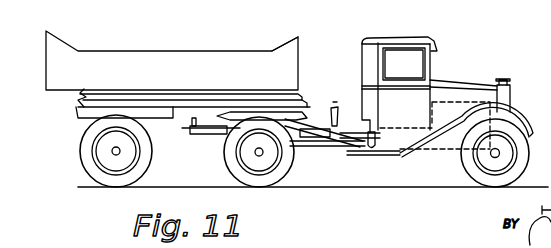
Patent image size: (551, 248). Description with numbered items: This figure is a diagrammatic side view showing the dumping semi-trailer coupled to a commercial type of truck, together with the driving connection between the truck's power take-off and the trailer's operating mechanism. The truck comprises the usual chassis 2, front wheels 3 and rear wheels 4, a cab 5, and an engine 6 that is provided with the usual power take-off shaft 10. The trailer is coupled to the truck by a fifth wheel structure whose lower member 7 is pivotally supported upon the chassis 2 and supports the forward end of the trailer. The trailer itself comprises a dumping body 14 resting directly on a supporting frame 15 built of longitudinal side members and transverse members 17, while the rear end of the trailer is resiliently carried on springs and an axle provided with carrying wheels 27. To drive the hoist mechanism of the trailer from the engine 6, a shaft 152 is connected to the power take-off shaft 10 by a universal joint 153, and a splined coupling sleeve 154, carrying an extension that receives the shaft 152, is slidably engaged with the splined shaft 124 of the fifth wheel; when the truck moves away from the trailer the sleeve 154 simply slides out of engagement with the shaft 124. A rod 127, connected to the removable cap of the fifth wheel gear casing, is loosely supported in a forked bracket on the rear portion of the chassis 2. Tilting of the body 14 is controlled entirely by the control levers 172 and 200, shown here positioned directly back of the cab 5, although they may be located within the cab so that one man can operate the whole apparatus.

The chassis 2 is at (300, 147).
The front wheels 3 is at (528, 157).
The rear wheels 4 is at (255, 188).
The cab 5 is at (409, 39).
The engine 6 is at (455, 103).
The lower member of fifth wheel 7 is at (264, 112).
The power take-off shaft 10 is at (369, 148).
The dumping body 14 is at (177, 50).
The supporting frame 15 is at (71, 107).
The transverse members 17 is at (88, 90).
The carrying wheels 27 is at (88, 165).
The splined shaft 124 is at (311, 115).
The rod 127 is at (208, 135).
The shaft 152 is at (346, 143).
The universal joint 153 is at (352, 146).
The splined coupling sleeve 154 is at (321, 118).
The control lever 172 is at (346, 109).
The operating lever 200 is at (337, 104).